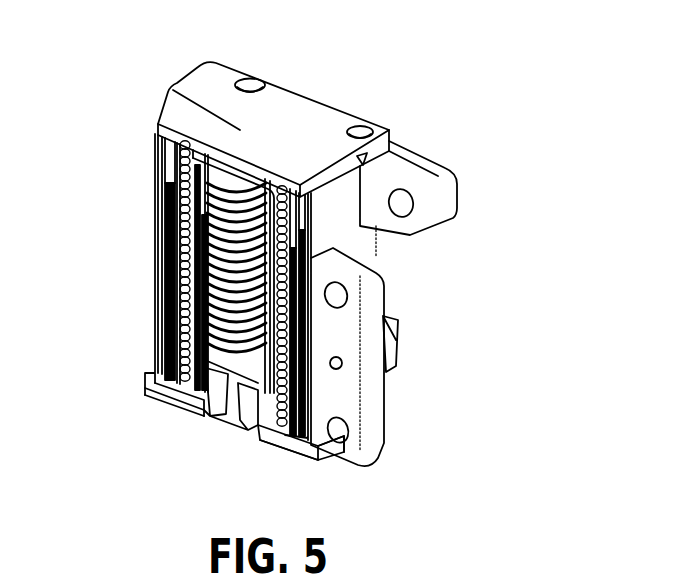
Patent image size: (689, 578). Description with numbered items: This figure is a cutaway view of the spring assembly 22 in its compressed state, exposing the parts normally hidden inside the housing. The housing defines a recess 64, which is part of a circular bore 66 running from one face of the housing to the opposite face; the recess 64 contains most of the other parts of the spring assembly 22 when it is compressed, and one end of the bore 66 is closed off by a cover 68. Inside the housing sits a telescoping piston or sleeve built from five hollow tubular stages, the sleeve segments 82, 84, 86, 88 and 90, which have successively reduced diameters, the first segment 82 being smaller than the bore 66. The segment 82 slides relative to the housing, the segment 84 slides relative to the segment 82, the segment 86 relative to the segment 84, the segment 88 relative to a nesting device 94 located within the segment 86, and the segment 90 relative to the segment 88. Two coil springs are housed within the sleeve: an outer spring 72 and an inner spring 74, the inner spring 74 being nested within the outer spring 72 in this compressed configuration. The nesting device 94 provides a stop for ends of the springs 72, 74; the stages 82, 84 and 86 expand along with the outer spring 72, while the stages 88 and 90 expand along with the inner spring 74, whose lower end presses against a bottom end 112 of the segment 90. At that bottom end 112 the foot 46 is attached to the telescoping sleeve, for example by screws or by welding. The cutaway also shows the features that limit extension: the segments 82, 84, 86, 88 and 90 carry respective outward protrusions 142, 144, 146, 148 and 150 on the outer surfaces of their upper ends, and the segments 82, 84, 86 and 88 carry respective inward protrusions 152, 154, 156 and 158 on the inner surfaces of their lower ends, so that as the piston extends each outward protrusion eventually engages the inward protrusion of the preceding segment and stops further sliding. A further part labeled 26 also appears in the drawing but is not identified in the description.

The spring assembly 22 is at (420, 118).
The mounting bracket connection 26 is at (338, 231).
The foot 46 is at (273, 440).
The recess 64 is at (290, 372).
The bore 66 is at (450, 190).
The cover 68 is at (273, 105).
The outer spring 72 is at (146, 332).
The inner spring 74 is at (180, 390).
The sleeve stage 82 is at (380, 298).
The sleeve stage 84 is at (290, 322).
The sleeve stage 86 is at (290, 353).
The sleeve stage 88 is at (167, 247).
The sleeve stage 90 is at (197, 292).
The nesting device 94 is at (255, 178).
The bottom end 112 is at (220, 415).
The outward protrusion 142 is at (150, 141).
The outward protrusion 144 is at (147, 152).
The outward protrusion 146 is at (163, 167).
The outward protrusion 148 is at (151, 113).
The outward protrusion 150 is at (200, 163).
The inward protrusion 152 is at (328, 438).
The inward protrusion 154 is at (263, 427).
The inward protrusion 156 is at (150, 382).
The inward protrusion 158 is at (185, 402).